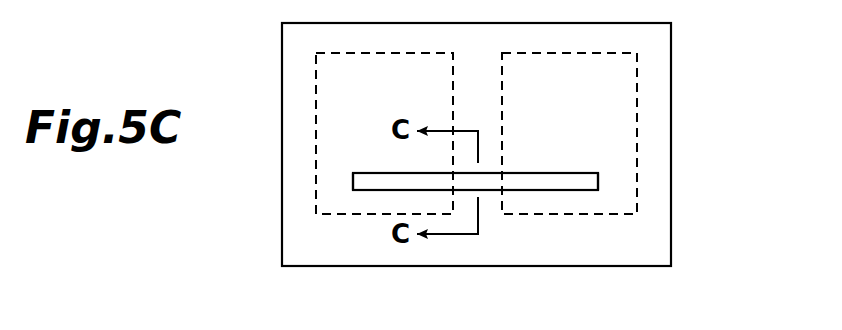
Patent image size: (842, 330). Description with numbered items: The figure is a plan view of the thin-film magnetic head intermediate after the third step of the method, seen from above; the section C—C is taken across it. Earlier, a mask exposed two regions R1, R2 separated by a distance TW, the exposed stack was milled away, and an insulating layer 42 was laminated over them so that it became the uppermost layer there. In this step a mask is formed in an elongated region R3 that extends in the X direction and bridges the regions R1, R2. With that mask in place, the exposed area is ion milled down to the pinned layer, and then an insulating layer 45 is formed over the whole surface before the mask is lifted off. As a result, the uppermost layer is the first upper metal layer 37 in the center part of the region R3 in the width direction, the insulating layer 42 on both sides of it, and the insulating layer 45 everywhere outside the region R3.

The insulating layer 45 is at (657, 61).
The first upper metal layer 37 is at (490, 184).
The insulating layer 42 is at (367, 184).
The region R1 is at (316, 107).
The region R2 is at (637, 117).
The elongated region R3 is at (583, 173).